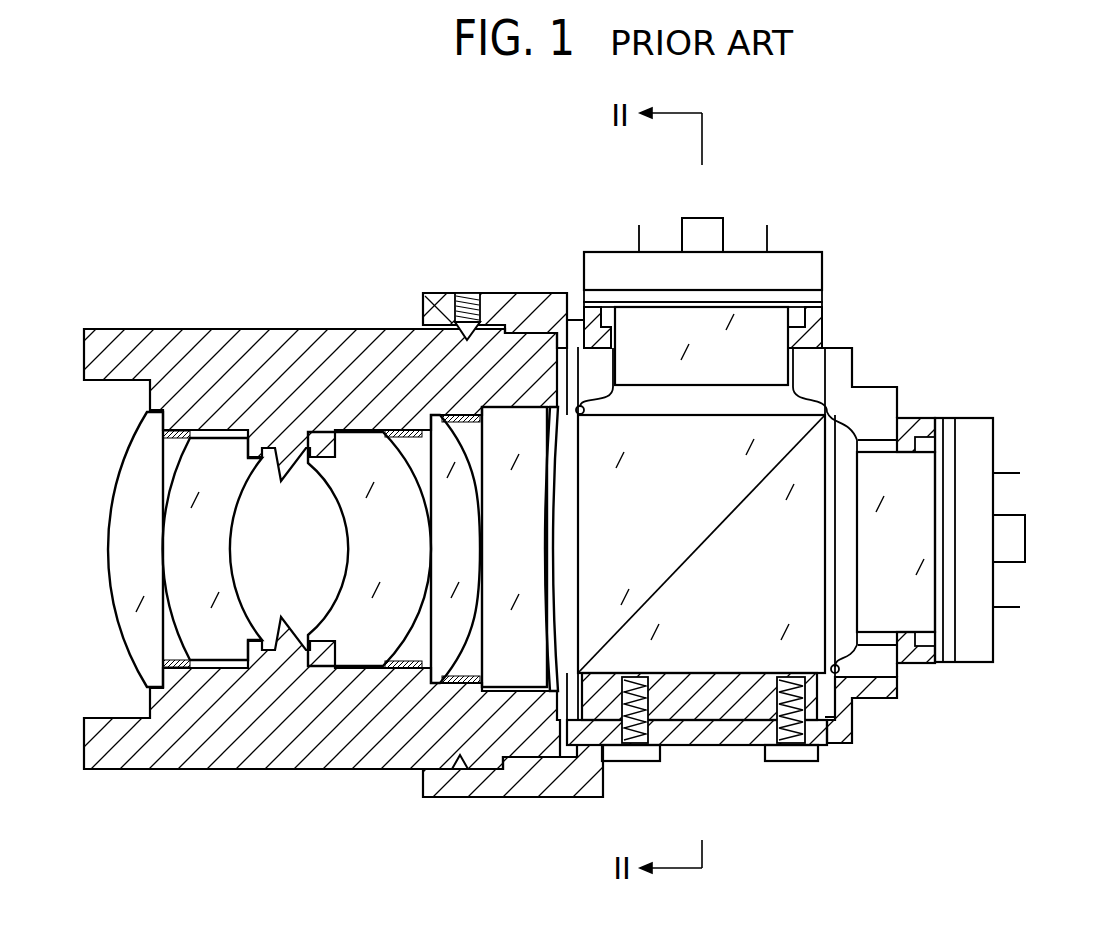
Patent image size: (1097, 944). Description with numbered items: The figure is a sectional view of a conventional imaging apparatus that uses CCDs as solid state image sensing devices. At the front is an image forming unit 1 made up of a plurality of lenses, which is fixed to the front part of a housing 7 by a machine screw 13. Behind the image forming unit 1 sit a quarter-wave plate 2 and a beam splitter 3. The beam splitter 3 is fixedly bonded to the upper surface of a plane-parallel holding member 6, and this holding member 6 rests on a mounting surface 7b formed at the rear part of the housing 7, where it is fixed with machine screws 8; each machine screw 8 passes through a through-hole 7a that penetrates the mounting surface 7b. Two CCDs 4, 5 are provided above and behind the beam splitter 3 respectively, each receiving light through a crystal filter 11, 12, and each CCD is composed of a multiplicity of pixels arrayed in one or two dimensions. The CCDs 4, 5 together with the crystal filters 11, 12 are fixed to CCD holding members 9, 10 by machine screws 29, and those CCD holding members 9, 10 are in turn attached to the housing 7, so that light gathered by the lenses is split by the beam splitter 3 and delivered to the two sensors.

The image forming unit 1 is at (285, 769).
The quarter-wave plate 2 is at (580, 722).
The beam splitter 3 is at (747, 652).
The CCD 4 is at (822, 266).
The CCD 5 is at (978, 449).
The holding member 6 is at (706, 708).
The housing 7 is at (840, 745).
The through-hole 7a is at (625, 761).
The mounting surface 7b is at (834, 707).
The machine screw 8 is at (650, 760).
The CCD holding member 9 is at (822, 307).
The CCD holding member 10 is at (920, 418).
The crystal filter 11 is at (776, 335).
The crystal filter 12 is at (902, 618).
The machine screw 13 is at (468, 293).
The machine screw 29 is at (721, 218).